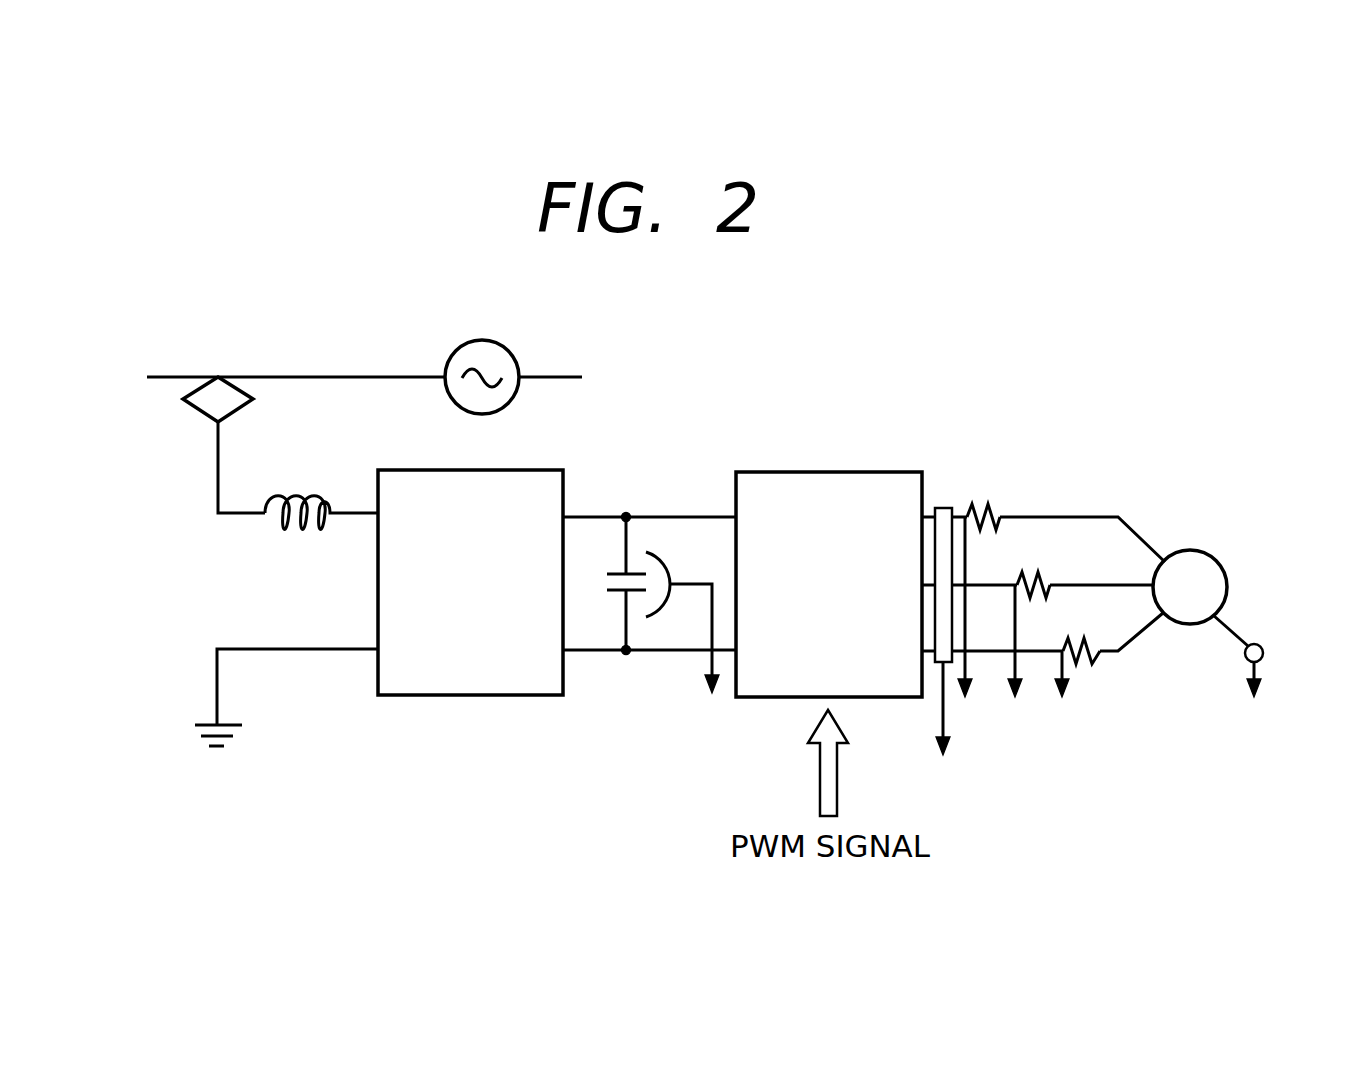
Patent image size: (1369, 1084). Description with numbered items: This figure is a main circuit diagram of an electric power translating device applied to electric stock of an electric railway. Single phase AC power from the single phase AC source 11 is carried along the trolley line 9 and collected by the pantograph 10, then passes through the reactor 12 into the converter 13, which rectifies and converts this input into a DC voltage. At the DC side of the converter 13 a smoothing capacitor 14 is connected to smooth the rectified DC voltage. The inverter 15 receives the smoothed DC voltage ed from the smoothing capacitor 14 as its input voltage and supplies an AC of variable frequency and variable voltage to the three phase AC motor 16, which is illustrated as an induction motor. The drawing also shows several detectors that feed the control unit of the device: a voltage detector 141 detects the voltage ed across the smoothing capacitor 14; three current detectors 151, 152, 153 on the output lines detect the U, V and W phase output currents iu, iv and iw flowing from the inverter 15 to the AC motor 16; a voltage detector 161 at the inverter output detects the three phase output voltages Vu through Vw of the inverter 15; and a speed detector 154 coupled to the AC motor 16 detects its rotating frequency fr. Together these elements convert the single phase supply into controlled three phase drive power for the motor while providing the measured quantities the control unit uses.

The trolley line 9 is at (337, 377).
The pantograph 10 is at (200, 415).
The single phase AC source 11 is at (517, 350).
The reactor 12 is at (292, 497).
The converter 13 is at (503, 467).
The smoothing capacitor 14 is at (610, 567).
The voltage detector 141 is at (680, 597).
The inverter 15 is at (860, 470).
The current detector 151 is at (993, 513).
The current detector 152 is at (1047, 580).
The current detector 153 is at (1080, 640).
The speed detector 154 is at (1263, 640).
The three phase AC motor 16 is at (1210, 547).
The voltage detector 161 is at (946, 505).